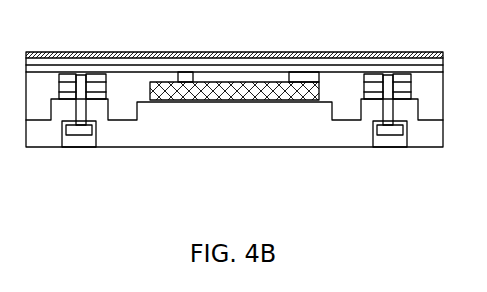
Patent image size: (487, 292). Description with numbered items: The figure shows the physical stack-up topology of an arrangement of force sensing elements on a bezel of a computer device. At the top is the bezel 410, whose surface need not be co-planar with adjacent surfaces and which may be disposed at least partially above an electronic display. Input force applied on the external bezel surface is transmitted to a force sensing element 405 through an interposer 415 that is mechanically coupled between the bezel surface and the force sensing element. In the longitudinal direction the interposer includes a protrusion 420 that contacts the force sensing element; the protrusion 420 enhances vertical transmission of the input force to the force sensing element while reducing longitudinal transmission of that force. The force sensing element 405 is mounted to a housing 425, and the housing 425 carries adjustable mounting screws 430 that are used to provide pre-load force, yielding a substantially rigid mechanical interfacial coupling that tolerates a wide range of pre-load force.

The force sensing element 405 is at (313, 82).
The bezel 410 is at (257, 52).
The interposer 415 is at (367, 77).
The protrusion 420 is at (190, 78).
The housing 425 is at (150, 148).
The adjustable mounting screws 430 is at (73, 137).